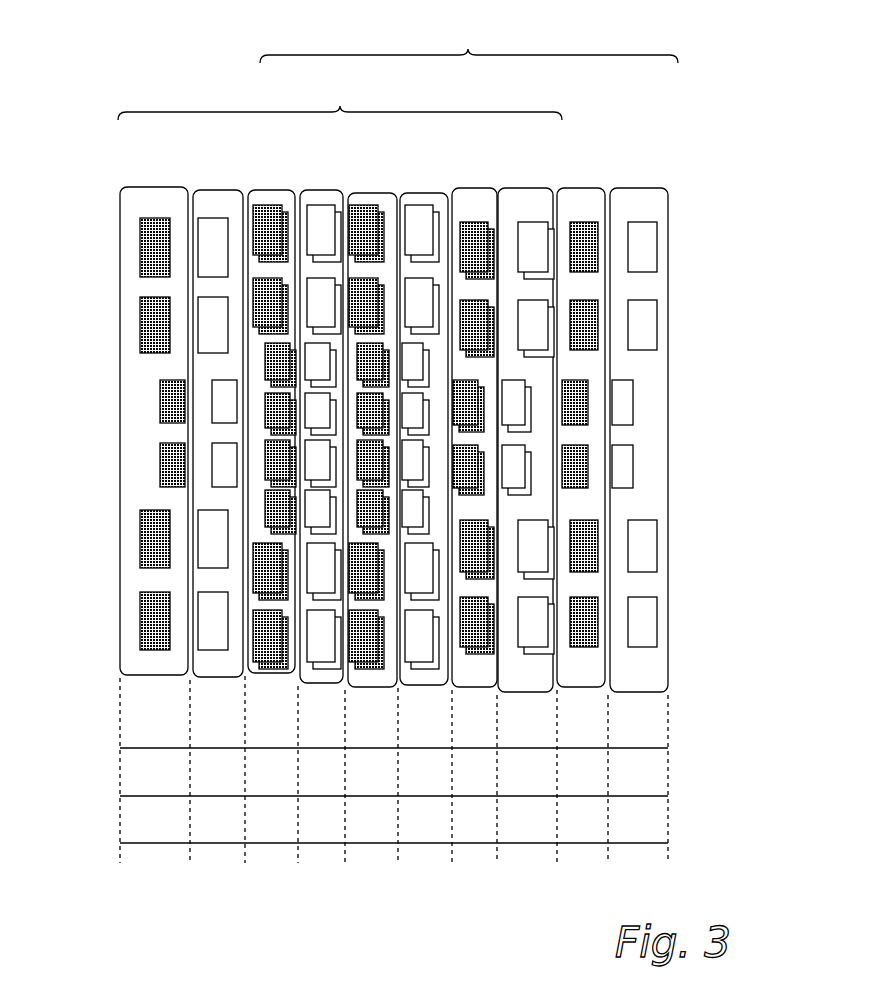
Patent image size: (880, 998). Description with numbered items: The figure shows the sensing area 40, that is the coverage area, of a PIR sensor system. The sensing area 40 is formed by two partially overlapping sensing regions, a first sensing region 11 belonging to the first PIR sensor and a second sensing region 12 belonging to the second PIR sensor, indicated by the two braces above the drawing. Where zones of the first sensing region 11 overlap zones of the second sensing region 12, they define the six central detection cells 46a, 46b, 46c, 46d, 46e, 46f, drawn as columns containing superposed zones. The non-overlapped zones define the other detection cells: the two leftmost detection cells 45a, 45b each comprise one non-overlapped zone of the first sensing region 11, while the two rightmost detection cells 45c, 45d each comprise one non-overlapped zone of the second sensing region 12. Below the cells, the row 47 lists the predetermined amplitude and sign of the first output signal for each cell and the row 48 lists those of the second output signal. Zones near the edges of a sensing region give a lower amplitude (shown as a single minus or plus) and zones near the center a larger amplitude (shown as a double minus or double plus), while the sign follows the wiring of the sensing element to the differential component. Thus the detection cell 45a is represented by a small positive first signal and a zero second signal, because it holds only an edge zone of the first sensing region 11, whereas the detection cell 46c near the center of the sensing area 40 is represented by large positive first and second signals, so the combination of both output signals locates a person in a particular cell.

The first sensing region 11 is at (340, 100).
The second sensing region 12 is at (469, 42).
The sensing area 40 is at (728, 197).
The detection cell 45a is at (157, 187).
The detection cell 45b is at (215, 190).
The detection cell 45c is at (580, 188).
The detection cell 45d is at (640, 188).
The detection cell 46a is at (272, 190).
The detection cell 46b is at (322, 190).
The detection cell 46c is at (372, 193).
The detection cell 46d is at (423, 193).
The detection cell 46e is at (475, 188).
The detection cell 46f is at (525, 188).
The row of first output signal characteristics 47 is at (93, 775).
The row of second output signal characteristics 48 is at (93, 827).